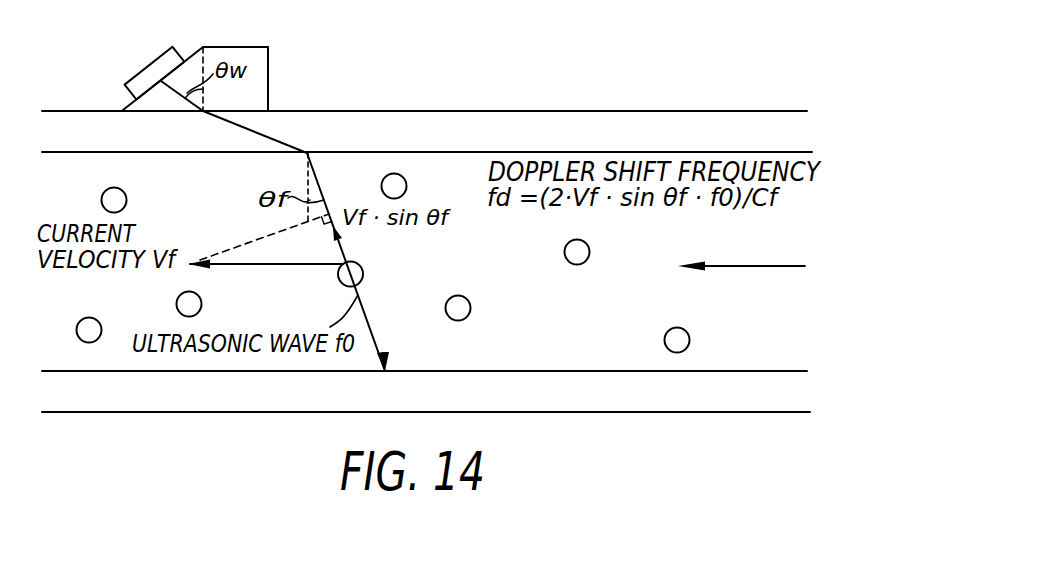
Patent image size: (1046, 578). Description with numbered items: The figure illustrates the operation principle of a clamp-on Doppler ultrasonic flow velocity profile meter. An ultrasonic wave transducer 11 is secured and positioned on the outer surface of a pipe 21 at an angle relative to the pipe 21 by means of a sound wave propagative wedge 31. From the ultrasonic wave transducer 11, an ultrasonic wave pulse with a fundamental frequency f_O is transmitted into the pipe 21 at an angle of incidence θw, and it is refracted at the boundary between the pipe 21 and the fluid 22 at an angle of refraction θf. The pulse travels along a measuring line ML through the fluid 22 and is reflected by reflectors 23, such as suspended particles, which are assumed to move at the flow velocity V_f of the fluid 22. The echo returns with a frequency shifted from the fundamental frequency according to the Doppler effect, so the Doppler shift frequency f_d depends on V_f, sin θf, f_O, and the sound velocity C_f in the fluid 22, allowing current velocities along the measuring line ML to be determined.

The ultrasonic wave transducer 11 is at (140, 72).
The sound wave propagative wedge 31 is at (263, 67).
The pipe 21 is at (623, 118).
The reflectors 23 is at (363, 273).
The fluid 22 is at (778, 267).
The measuring line ML is at (368, 322).